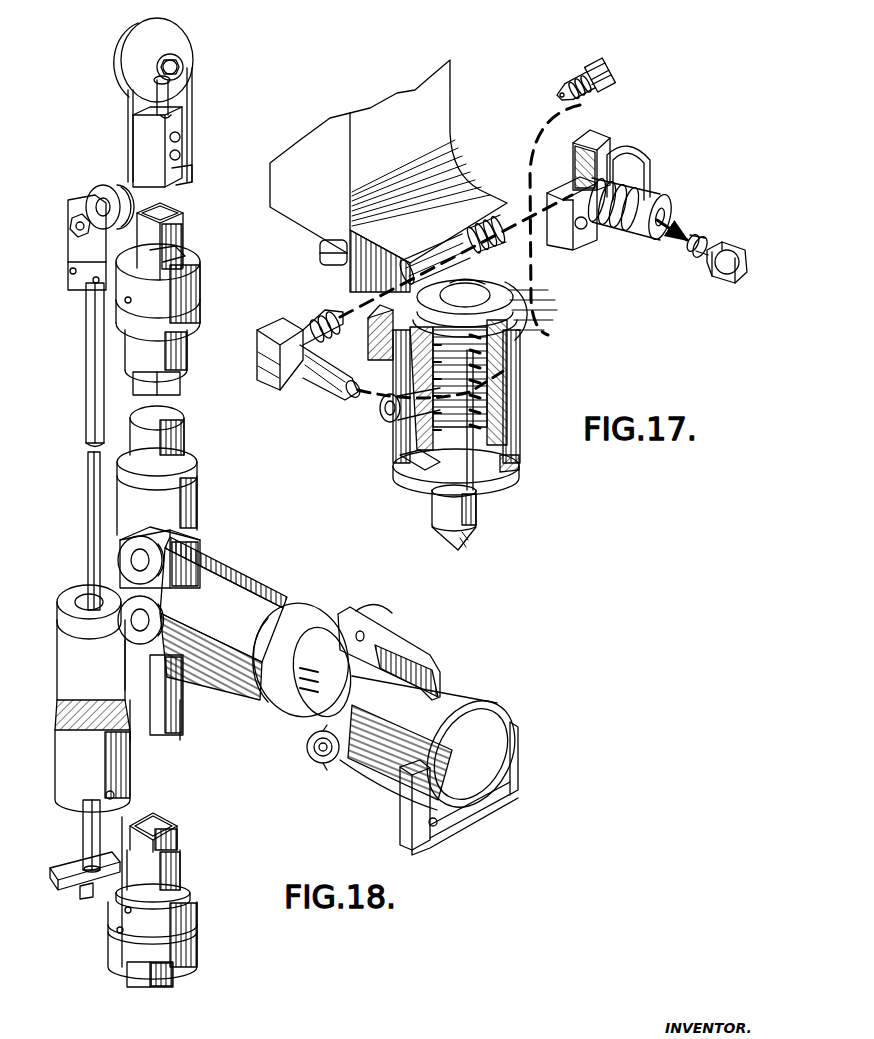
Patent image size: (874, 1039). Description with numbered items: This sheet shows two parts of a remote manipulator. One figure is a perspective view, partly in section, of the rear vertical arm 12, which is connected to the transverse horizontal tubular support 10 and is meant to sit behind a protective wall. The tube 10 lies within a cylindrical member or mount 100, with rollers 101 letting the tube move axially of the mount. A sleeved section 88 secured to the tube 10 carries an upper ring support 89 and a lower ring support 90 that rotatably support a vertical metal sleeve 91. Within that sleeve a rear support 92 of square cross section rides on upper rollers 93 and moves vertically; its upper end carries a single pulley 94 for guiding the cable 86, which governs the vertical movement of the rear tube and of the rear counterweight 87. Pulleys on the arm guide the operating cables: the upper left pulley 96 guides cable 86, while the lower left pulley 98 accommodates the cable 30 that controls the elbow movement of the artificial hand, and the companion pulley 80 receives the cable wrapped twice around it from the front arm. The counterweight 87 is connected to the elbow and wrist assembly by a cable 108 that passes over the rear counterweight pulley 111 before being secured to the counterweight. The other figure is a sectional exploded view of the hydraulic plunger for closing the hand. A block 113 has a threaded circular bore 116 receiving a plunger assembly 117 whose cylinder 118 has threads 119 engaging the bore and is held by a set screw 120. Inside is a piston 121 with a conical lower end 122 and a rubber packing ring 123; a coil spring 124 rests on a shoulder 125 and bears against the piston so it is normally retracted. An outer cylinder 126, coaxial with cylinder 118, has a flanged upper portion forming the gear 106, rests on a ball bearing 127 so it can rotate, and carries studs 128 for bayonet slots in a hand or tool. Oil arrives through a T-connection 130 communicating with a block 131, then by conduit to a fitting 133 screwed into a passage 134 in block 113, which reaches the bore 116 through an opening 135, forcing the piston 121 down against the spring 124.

In FIG. 18, the single pulley 94 is at (190, 40).
In FIG. 18, the cable 86 is at (190, 133).
In FIG. 18, the rear counterweight pulley 111 is at (90, 191).
In FIG. 18, the rear support 92 is at (172, 240).
In FIG. 18, the upper rollers 93 is at (151, 319).
In FIG. 18, the cable 108 is at (118, 356).
In FIG. 18, the upper ring support 89 is at (135, 495).
In FIG. 18, the upper left pulley 96 is at (128, 548).
In FIG. 18, the companion pulley 80 is at (120, 567).
In FIG. 18, the lower left pulley 98 is at (65, 616).
In FIG. 18, the rear counterweight 87 is at (78, 677).
In FIG. 18, the cable 30 is at (126, 666).
In FIG. 18, the sleeved section 88 is at (240, 616).
In FIG. 18, the transverse horizontal tubular support 10 is at (313, 620).
In FIG. 18, the rollers 101 is at (398, 635).
In FIG. 18, the cylindrical member or mount 100 is at (467, 693).
In FIG. 18, the lower ring support 90 is at (155, 688).
In FIG. 18, the vertical metal sleeve 91 is at (170, 733).
In FIG. 18, the rear vertical arm 12 is at (196, 876).
In FIG. 17, the block 113 is at (303, 150).
In FIG. 17, the fitting 133 is at (290, 320).
In FIG. 17, the passage 134 is at (437, 262).
In FIG. 17, the opening 135 is at (440, 243).
In FIG. 17, the block 131 is at (580, 145).
In FIG. 17, the T-connection 130 is at (650, 193).
In FIG. 17, the circular bore 116 is at (500, 276).
In FIG. 17, the threads 119 is at (523, 299).
In FIG. 17, the gear 106 is at (548, 324).
In FIG. 17, the rubber packing ring 123 is at (485, 376).
In FIG. 17, the outer cylinder 126 is at (482, 394).
In FIG. 17, the plunger assembly 117 is at (522, 406).
In FIG. 17, the ball bearing 127 is at (519, 462).
In FIG. 17, the shoulder 125 is at (477, 475).
In FIG. 17, the piston 121 is at (440, 496).
In FIG. 17, the conical lower end 122 is at (450, 529).
In FIG. 17, the coil spring 124 is at (415, 430).
In FIG. 17, the studs 128 is at (380, 410).
In FIG. 17, the set screw 120 is at (407, 313).
In FIG. 17, the cylinder 118 is at (440, 350).